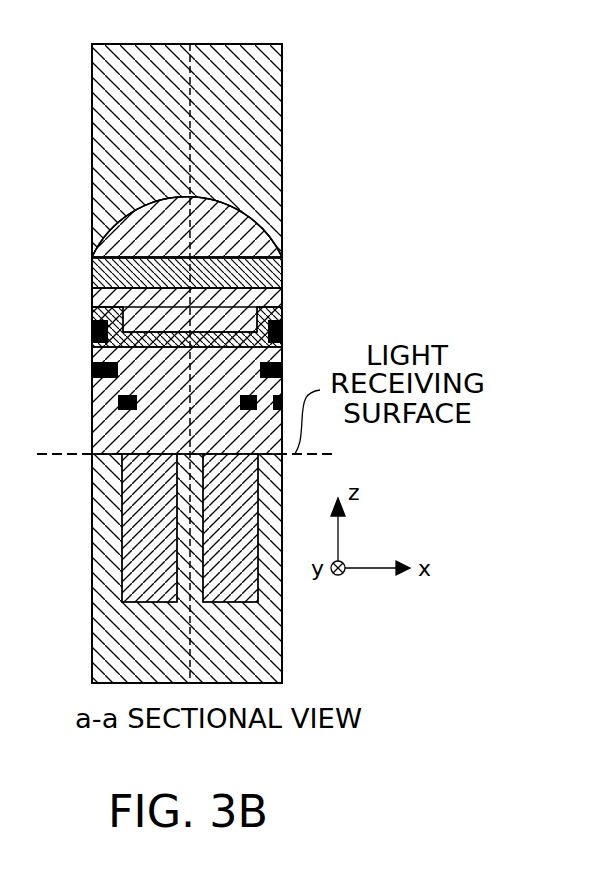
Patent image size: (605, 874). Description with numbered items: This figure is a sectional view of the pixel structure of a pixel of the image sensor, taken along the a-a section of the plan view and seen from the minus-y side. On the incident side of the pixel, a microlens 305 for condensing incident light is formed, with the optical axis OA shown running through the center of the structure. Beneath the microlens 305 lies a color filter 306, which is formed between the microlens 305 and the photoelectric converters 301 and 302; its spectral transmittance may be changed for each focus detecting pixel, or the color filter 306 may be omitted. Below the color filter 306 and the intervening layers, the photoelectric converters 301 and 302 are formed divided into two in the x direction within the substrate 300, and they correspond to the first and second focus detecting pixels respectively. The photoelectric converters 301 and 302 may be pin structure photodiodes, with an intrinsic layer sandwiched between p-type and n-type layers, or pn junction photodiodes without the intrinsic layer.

The p-type semiconductor substrate 300 is at (120, 628).
The photoelectric converter 301 is at (143, 562).
The photoelectric converter 302 is at (243, 582).
The microlens 305 is at (250, 226).
The color filter 306 is at (260, 266).
The optical axis OA is at (186, 166).